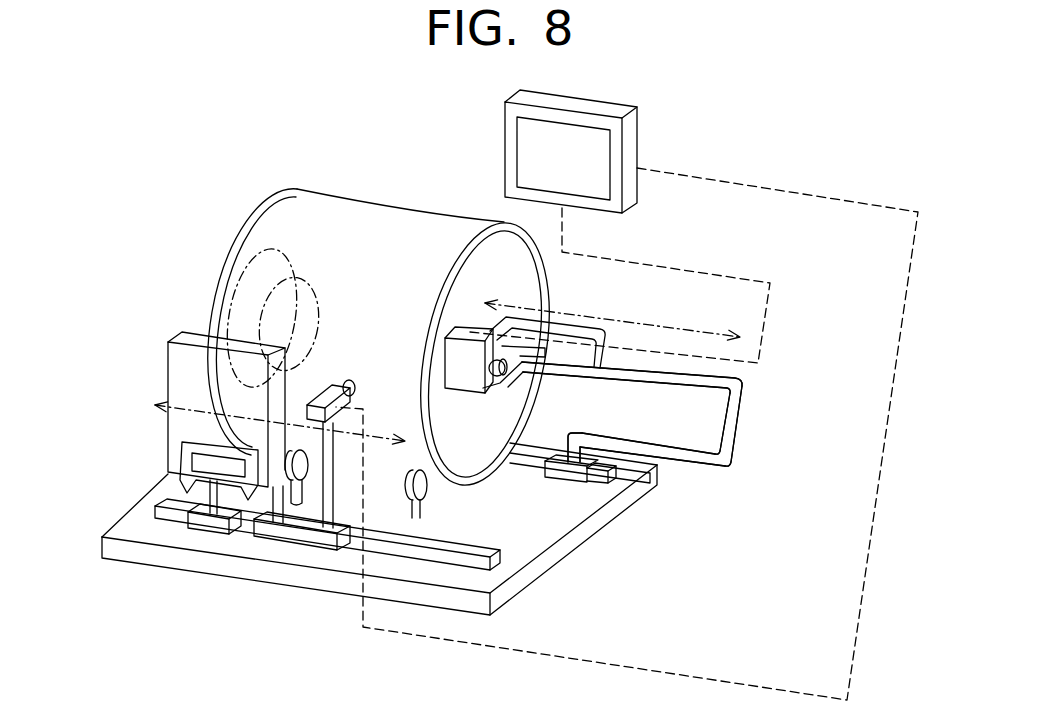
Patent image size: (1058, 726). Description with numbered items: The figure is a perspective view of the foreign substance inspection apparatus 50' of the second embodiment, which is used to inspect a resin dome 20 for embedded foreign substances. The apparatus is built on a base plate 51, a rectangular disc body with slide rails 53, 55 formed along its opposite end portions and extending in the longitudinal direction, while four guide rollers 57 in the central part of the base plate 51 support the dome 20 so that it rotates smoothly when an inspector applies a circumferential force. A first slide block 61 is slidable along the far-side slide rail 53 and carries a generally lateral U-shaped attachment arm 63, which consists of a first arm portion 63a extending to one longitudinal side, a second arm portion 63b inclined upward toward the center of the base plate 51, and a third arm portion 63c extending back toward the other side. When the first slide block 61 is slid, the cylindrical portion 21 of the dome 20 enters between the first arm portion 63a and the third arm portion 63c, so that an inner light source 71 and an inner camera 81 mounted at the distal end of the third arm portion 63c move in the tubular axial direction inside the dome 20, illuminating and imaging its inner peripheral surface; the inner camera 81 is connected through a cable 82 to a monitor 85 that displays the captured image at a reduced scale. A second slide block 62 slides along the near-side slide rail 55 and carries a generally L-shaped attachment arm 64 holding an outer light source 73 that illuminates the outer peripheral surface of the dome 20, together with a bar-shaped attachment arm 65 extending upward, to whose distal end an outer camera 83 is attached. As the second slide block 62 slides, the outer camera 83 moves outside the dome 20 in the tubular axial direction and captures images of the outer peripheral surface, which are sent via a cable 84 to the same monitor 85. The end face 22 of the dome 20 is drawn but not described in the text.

The dome 20 is at (330, 197).
The cylindrical portion 21 is at (392, 232).
The gantry end face 22 is at (240, 228).
The inner light source 71 is at (458, 357).
The monitor 85 is at (637, 138).
The cable 84 is at (865, 580).
The cable 82 is at (770, 322).
The inner camera 81 is at (488, 318).
The outer light source 73 is at (185, 360).
The foreign substance inspection apparatus 50' is at (235, 379).
The attachment arm 63 is at (740, 416).
The first arm portion 63a is at (640, 447).
The second arm portion 63b is at (740, 440).
The third arm portion 63c is at (700, 375).
The first slide block 61 is at (562, 432).
The attachment arm 64 is at (180, 460).
The slide rail 53 is at (612, 477).
The base plate 51 is at (565, 515).
The slide rail 55 is at (497, 568).
The second slide block 62 is at (212, 530).
The outer camera 83 is at (310, 503).
The attachment arm 65 is at (330, 478).
The guide rollers 57 is at (420, 518).